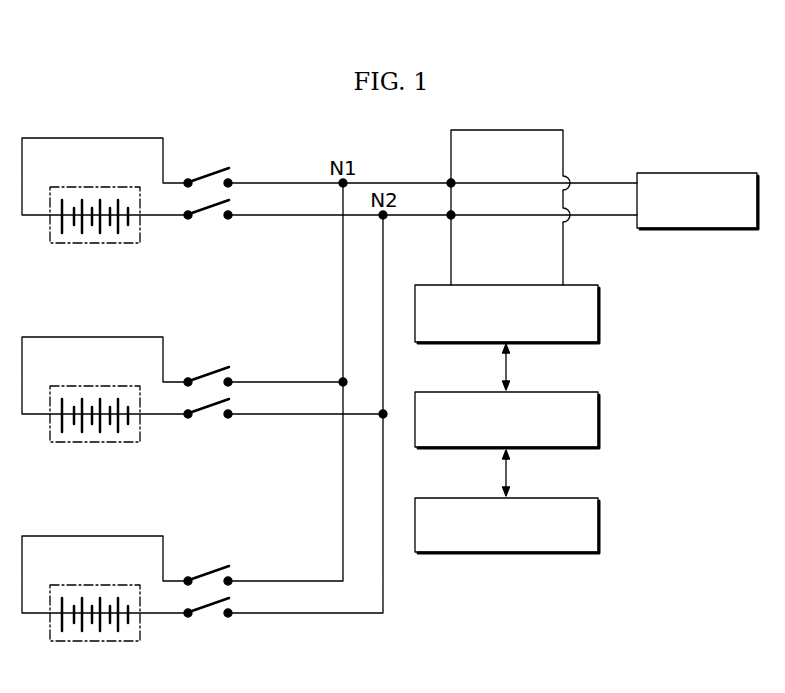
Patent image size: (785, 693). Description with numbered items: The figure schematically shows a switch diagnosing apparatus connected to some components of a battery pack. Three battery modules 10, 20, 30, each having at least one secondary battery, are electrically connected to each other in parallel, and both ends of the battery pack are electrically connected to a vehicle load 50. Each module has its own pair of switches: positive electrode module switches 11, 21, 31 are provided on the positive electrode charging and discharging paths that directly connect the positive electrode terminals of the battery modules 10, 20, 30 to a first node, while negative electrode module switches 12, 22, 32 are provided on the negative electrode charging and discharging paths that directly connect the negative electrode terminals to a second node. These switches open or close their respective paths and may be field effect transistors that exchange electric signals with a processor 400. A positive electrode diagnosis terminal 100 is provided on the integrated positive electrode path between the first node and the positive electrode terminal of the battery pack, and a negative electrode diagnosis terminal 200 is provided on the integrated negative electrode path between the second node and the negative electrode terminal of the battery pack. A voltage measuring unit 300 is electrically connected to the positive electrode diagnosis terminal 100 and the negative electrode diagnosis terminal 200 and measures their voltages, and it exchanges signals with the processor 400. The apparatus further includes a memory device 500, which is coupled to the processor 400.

The battery module 10 is at (103, 187).
The positive electrode module switch 11 is at (209, 174).
The negative electrode module switch 12 is at (210, 207).
The battery module 20 is at (103, 386).
The positive electrode module switch 21 is at (209, 373).
The negative electrode module switch 22 is at (210, 406).
The battery module 30 is at (103, 585).
The positive electrode module switch 31 is at (209, 572).
The negative electrode module switch 32 is at (210, 605).
The vehicle load 50 is at (732, 172).
The positive electrode diagnosis terminal 100 is at (450, 182).
The negative electrode diagnosis terminal 200 is at (450, 220).
The voltage measuring unit 300 is at (603, 318).
The processor 400 is at (603, 421).
The memory device 500 is at (603, 528).